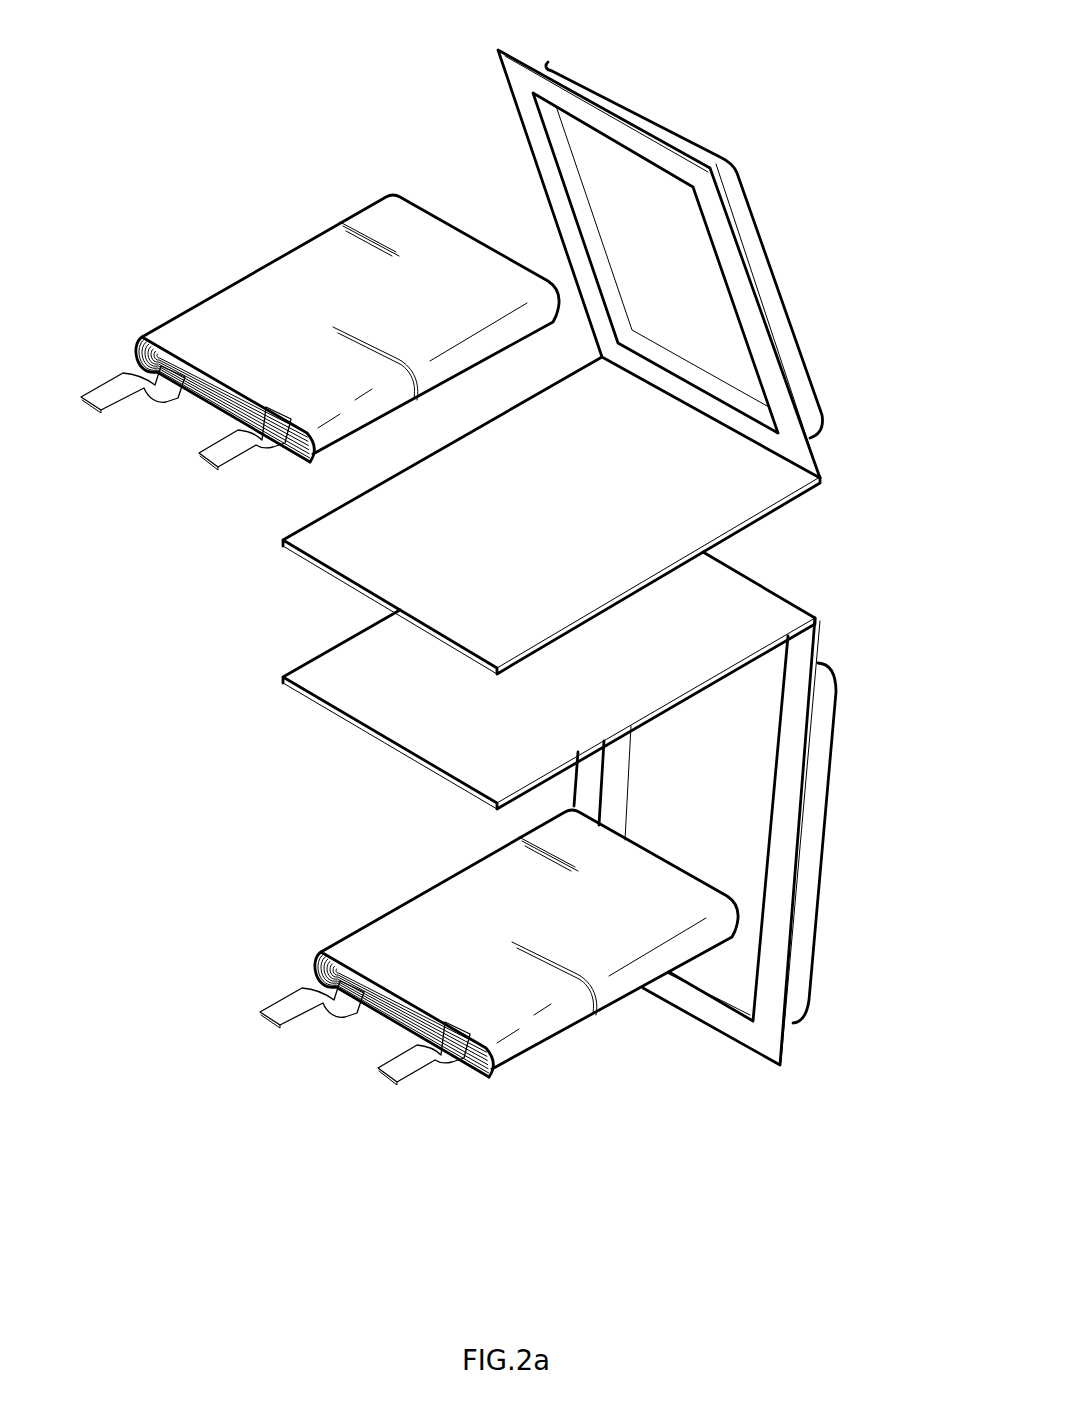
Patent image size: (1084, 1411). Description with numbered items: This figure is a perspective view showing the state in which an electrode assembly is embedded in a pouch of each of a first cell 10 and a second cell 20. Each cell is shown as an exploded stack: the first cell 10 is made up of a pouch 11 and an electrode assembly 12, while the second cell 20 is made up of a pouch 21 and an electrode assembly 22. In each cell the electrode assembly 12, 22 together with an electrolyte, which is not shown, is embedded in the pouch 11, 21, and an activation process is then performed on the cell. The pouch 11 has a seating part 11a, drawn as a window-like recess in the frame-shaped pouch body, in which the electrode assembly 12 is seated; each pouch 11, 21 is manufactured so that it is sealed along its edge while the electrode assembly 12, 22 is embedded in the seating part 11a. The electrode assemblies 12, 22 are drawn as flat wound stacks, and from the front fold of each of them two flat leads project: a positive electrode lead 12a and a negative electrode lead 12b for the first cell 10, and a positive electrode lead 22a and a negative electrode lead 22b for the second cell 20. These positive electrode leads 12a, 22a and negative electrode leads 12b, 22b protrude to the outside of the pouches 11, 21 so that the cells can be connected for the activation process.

The first cell 10 is at (671, 84).
The pouch 11 is at (531, 117).
The seating part 11a is at (605, 165).
The electrode assembly 12 is at (253, 292).
The positive electrode lead 12a is at (102, 398).
The negative electrode lead 12b is at (216, 452).
The second cell 20 is at (855, 640).
The pouch 21 is at (812, 840).
The electrode assembly 22 is at (432, 907).
The positive electrode lead 22a is at (281, 1013).
The negative electrode lead 22b is at (395, 1066).